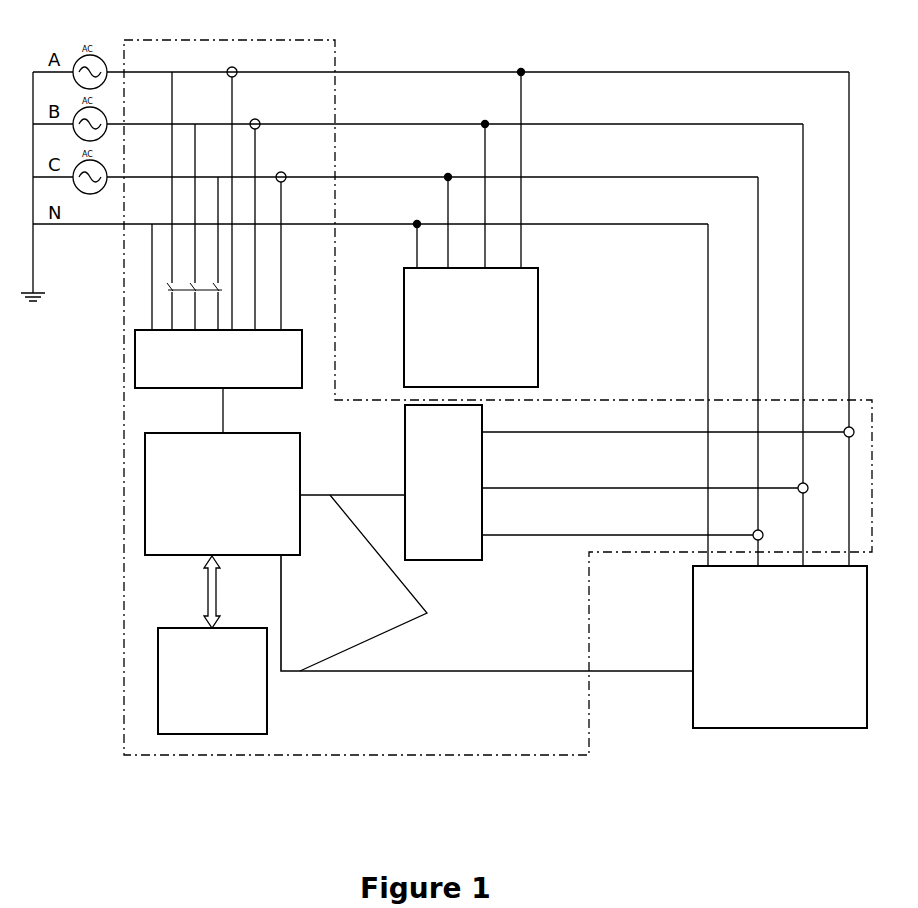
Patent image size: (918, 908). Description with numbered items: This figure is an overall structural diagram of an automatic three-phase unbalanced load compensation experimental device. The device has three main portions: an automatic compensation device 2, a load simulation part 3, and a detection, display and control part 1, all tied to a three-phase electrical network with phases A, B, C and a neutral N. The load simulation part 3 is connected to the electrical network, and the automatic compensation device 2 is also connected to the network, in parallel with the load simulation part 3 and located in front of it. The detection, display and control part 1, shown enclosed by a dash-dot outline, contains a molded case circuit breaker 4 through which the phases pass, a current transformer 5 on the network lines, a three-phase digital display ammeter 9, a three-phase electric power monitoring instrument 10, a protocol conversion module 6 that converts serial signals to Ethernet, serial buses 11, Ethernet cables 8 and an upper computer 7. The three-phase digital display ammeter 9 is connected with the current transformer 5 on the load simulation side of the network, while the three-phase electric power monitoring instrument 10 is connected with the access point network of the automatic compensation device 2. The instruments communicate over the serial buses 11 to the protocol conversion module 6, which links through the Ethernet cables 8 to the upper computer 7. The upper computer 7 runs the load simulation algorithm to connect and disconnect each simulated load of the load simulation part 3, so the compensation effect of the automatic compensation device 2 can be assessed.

The detection, display and control part 1 is at (122, 465).
The automatic compensation device 2 is at (471, 327).
The load simulation part 3 is at (780, 647).
The molded case circuit breaker 4 is at (183, 292).
The current transformer 5 is at (237, 69).
The protocol conversion module 6 is at (222, 494).
The upper computer 7 is at (212, 681).
The Ethernet cables 8 is at (205, 590).
The three-phase digital display ammeter 9 is at (443, 482).
The three-phase electric power monitoring instrument 10 is at (218, 359).
The 485 buses 11 is at (220, 409).